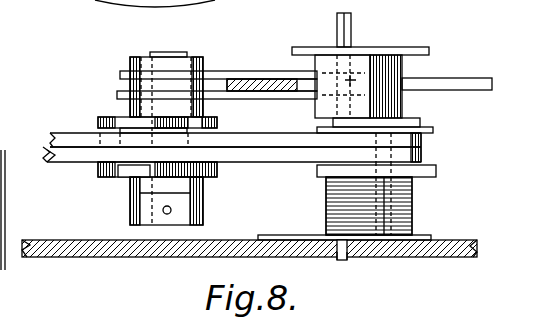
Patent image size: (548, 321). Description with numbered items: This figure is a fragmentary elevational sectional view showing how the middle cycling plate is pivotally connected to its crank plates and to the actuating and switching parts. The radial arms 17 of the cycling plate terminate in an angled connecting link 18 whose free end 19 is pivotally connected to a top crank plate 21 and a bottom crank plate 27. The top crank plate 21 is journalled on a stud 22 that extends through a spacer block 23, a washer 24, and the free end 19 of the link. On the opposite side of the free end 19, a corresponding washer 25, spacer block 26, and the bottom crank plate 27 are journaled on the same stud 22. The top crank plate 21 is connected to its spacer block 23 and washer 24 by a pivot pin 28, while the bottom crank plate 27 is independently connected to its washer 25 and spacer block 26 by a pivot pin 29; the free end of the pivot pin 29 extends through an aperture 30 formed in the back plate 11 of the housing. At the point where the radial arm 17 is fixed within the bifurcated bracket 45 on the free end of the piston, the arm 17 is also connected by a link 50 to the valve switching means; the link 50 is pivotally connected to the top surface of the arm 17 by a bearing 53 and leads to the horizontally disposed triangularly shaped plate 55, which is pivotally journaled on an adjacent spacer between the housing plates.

The back plate 11 is at (452, 256).
The radial arms 17 is at (53, 158).
The connecting link 18 is at (258, 134).
The free end 19 is at (422, 152).
The top crank plate 21 is at (408, 50).
The stud 22 is at (372, 66).
The spacer block 23 is at (398, 70).
The washer 24 is at (410, 123).
The washer 25 is at (420, 172).
The spacer block 26 is at (408, 212).
The bottom crank plate 27 is at (410, 237).
The pivot pin 28 is at (340, 32).
The pivot pin 29 is at (347, 260).
The aperture 30 is at (337, 255).
The bifurcated bracket 45 is at (118, 176).
The link 50 is at (238, 72).
The bearing 53 is at (142, 57).
The triangularly shaped plate 55 is at (292, 80).